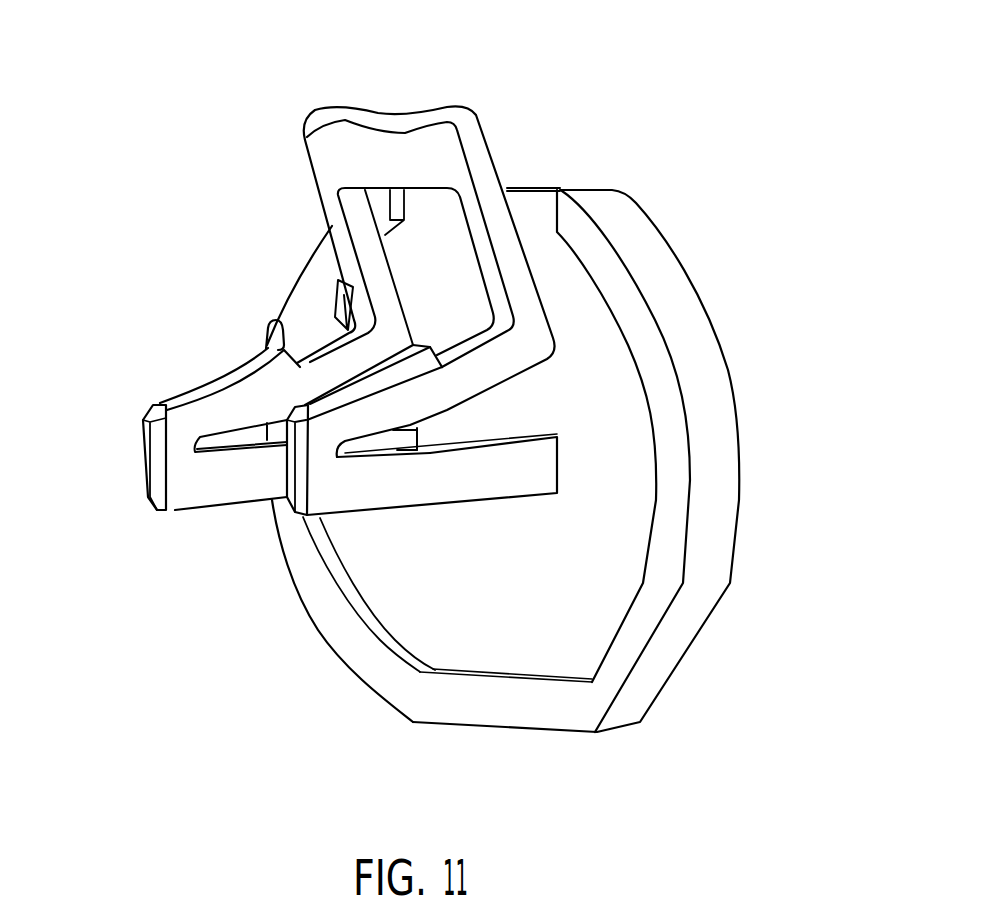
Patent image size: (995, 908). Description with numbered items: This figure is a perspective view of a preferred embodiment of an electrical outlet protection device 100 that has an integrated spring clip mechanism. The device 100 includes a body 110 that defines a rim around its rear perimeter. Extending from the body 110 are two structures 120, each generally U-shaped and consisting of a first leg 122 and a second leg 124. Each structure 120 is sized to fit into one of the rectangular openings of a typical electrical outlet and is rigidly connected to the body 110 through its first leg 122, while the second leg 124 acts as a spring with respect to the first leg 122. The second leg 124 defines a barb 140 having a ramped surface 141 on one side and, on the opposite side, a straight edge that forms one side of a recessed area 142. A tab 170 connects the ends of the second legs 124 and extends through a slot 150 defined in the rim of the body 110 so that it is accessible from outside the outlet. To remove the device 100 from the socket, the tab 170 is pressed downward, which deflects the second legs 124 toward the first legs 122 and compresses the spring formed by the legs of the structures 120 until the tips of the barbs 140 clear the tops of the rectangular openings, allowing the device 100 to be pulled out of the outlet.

The device 100 is at (788, 262).
The body 110 is at (697, 612).
The structure 120 is at (116, 474).
The first leg 122 is at (367, 502).
The second leg 124 is at (397, 408).
The barb 140 is at (278, 322).
The ramped surface 141 is at (222, 385).
The recessed area 142 is at (338, 330).
The slot 150 is at (537, 197).
The tab 170 is at (470, 108).